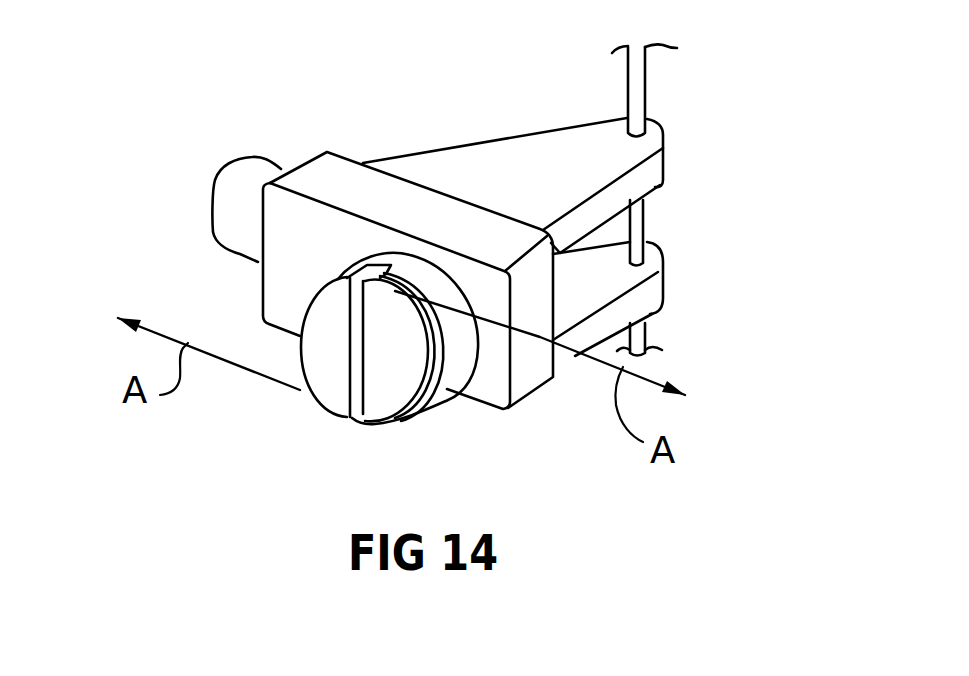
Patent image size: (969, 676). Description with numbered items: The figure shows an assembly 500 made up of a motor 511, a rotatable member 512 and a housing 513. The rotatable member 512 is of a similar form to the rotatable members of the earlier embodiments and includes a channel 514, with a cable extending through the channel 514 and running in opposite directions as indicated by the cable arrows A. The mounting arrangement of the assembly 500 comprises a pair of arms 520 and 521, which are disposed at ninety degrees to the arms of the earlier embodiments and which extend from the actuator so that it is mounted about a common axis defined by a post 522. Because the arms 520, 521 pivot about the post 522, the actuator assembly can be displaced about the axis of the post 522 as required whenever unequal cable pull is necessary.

The assembly 500 is at (350, 97).
The motor 511 is at (233, 198).
The rotatable member 512 is at (325, 368).
The housing 513 is at (280, 283).
The channel 514 is at (393, 393).
The arm 520 is at (530, 157).
The arm 521 is at (655, 293).
The post 522 is at (637, 78).